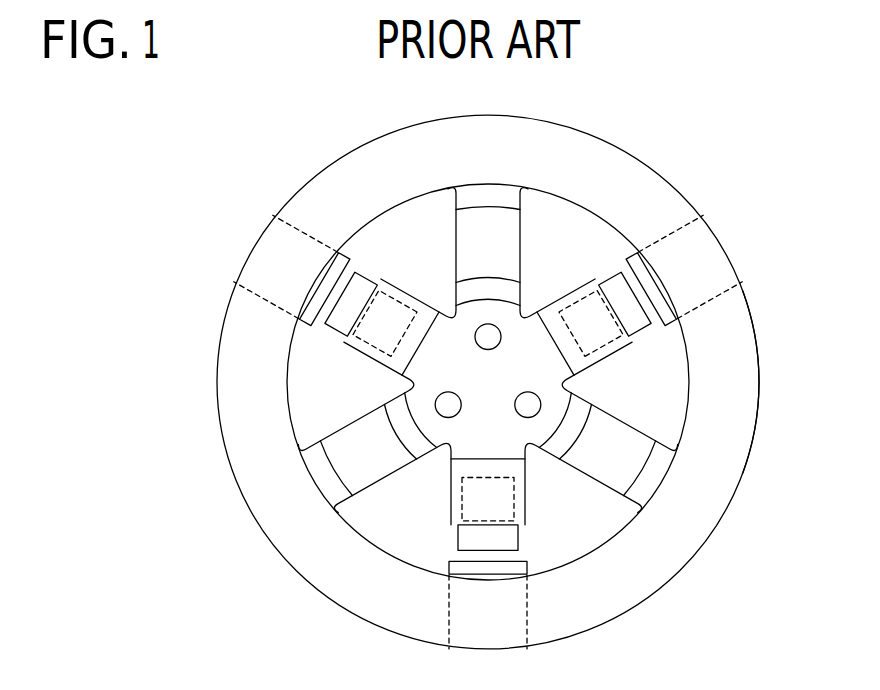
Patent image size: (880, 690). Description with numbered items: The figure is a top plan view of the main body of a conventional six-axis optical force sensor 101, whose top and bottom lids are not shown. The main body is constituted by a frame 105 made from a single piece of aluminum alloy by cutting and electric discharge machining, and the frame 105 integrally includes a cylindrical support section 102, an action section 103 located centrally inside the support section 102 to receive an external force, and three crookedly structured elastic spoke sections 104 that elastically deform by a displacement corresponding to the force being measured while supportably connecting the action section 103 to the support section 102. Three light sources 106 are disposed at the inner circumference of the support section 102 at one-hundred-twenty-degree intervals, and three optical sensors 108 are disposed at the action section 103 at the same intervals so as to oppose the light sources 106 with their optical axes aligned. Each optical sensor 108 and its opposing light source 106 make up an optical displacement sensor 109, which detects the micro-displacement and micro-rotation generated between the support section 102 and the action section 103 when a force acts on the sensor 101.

The six-axis optical force sensor 101 is at (723, 183).
The cylindrical support section 102 is at (663, 572).
The action section 103 is at (580, 385).
The elastic spoke section 104 is at (511, 242).
The frame 105 is at (761, 397).
The light source 106 is at (621, 253).
The optical sensor 108 is at (363, 274).
The optical displacement sensor 109 is at (608, 262).